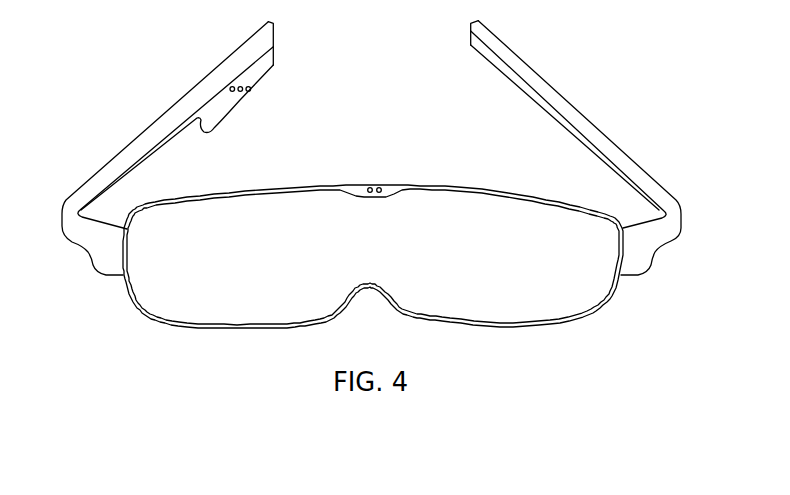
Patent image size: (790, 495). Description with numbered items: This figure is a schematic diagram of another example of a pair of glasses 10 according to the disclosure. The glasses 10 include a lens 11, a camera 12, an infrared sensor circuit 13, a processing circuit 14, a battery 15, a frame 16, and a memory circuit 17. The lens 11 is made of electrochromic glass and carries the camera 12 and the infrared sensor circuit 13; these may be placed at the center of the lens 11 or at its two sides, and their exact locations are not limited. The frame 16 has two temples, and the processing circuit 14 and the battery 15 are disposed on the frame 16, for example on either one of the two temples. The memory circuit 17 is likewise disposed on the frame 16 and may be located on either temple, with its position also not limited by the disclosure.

The glasses 10 is at (371, 174).
The lens 11 is at (433, 210).
The camera 12 is at (370, 186).
The infrared sensor circuit 13 is at (382, 186).
The processing circuit 14 is at (224, 88).
The battery 15 is at (237, 87).
The frame 16 is at (595, 113).
The memory circuit 17 is at (252, 87).